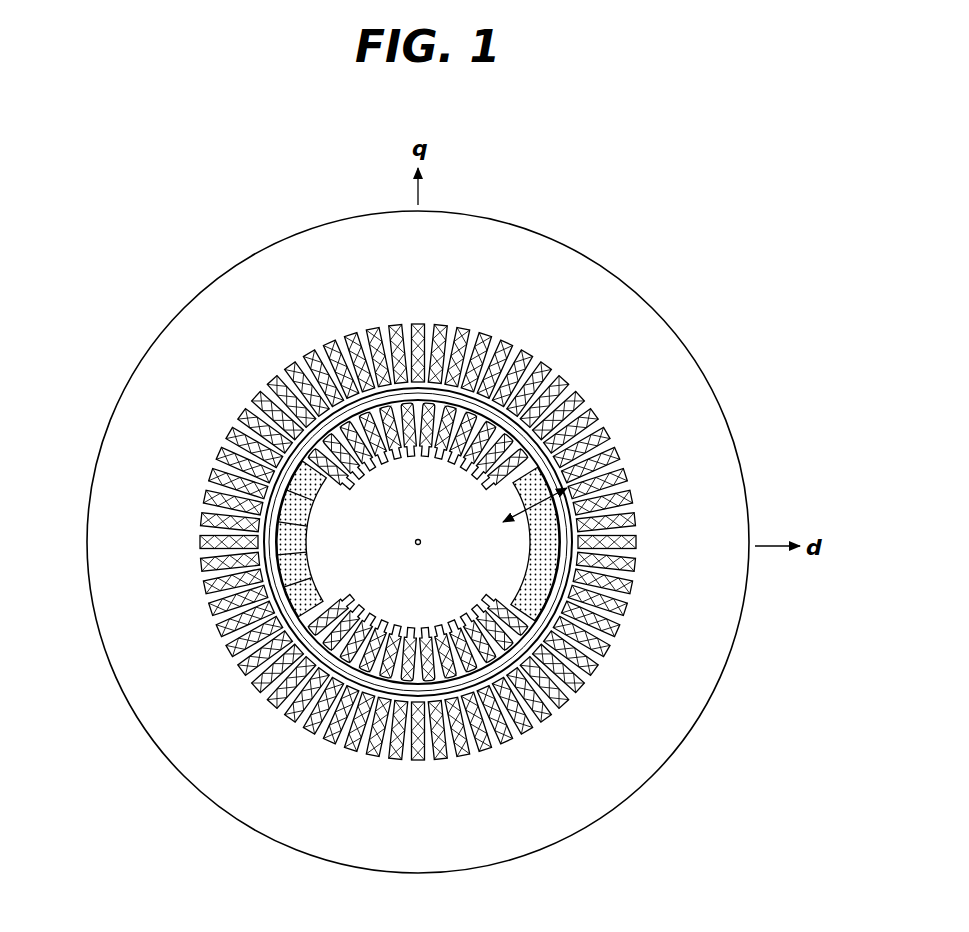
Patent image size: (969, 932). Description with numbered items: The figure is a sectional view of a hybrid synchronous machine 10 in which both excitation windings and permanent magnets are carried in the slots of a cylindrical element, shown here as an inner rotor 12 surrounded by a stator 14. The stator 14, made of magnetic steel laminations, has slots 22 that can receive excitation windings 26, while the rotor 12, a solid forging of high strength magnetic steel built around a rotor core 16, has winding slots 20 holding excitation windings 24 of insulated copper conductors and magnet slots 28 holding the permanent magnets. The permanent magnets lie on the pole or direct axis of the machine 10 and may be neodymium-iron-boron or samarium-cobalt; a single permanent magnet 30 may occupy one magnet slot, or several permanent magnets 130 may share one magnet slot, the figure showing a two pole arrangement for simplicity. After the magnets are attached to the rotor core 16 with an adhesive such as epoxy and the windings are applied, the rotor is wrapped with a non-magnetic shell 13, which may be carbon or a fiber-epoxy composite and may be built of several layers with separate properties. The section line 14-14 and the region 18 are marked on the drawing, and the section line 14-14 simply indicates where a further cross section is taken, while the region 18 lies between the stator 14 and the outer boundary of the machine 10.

The machine 10 is at (200, 226).
The rotor 12 is at (384, 533).
The non-magnetic shell 13 is at (417, 437).
The stator 14 is at (118, 373).
The section line 14-14 is at (570, 494).
The rotor core 16 is at (431, 530).
The stator yoke 18 is at (430, 823).
The winding slots 20 is at (334, 601).
The slots 22 is at (278, 709).
The excitation windings 24 is at (347, 598).
The excitation windings 26 is at (272, 697).
The magnet slots 28 is at (517, 471).
The permanent magnet 30 is at (520, 588).
The permanent magnets 130 is at (310, 507).